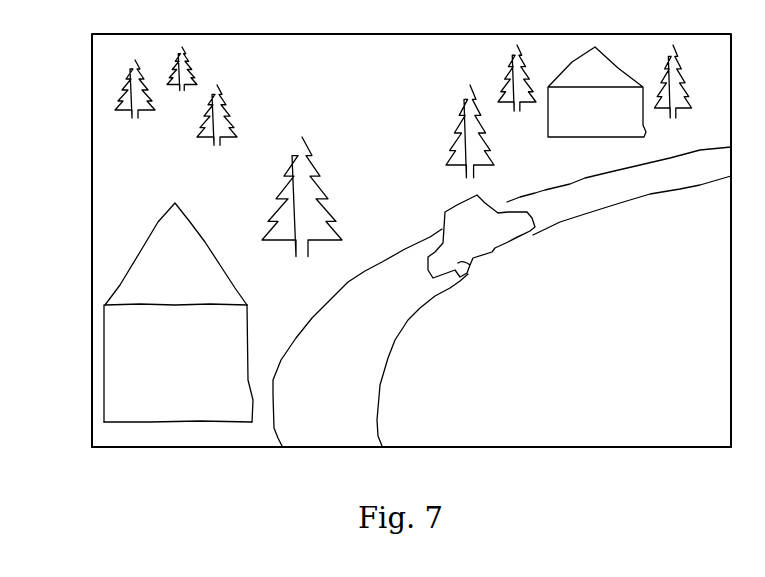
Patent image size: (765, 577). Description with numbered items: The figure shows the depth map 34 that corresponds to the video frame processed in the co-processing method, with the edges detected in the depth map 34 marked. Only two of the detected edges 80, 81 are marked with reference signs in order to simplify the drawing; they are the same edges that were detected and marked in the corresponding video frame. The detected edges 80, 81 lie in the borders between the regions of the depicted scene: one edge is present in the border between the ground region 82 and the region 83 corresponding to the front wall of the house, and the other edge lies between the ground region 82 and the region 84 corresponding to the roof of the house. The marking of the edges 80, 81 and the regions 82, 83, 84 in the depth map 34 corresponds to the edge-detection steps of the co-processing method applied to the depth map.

The depth map 34 is at (91, 237).
The detected edge 80 is at (103, 380).
The detected edge 81 is at (127, 278).
The ground region 82 is at (100, 441).
The front wall region 83 is at (105, 421).
The roof region 84 is at (105, 305).